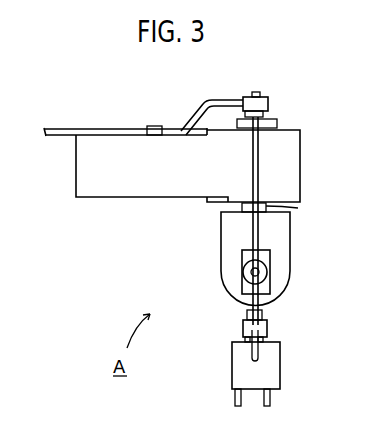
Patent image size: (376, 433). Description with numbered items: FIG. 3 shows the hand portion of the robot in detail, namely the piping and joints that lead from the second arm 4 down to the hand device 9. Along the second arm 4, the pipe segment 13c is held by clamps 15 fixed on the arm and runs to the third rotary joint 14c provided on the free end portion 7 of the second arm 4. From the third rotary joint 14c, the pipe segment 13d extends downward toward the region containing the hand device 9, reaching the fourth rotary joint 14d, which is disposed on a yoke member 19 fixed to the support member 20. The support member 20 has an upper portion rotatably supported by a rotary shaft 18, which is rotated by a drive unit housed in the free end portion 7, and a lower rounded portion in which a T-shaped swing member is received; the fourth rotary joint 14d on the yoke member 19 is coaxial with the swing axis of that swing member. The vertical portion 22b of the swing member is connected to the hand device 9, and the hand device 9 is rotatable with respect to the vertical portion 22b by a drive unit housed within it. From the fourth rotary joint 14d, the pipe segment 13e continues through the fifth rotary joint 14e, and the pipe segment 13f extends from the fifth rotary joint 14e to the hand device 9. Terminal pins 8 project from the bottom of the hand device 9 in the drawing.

The second arm 4 is at (82, 173).
The free end portion 7 is at (298, 157).
The terminal pins 8 is at (273, 399).
The hand device 9 is at (231, 356).
The pipe segment 13c is at (103, 129).
The pipe segment 13d is at (250, 153).
The pipe segment 13e is at (243, 307).
The pipe segment 13f is at (262, 360).
The third rotary joint 14c is at (260, 96).
The fourth rotary joint 14d is at (246, 269).
The fifth rotary joint 14e is at (247, 318).
The clamp 15 is at (164, 126).
The rotary shaft 18 is at (298, 208).
The yoke member 19 is at (273, 122).
The support member 20 is at (291, 231).
The vertical portion 22b is at (270, 306).